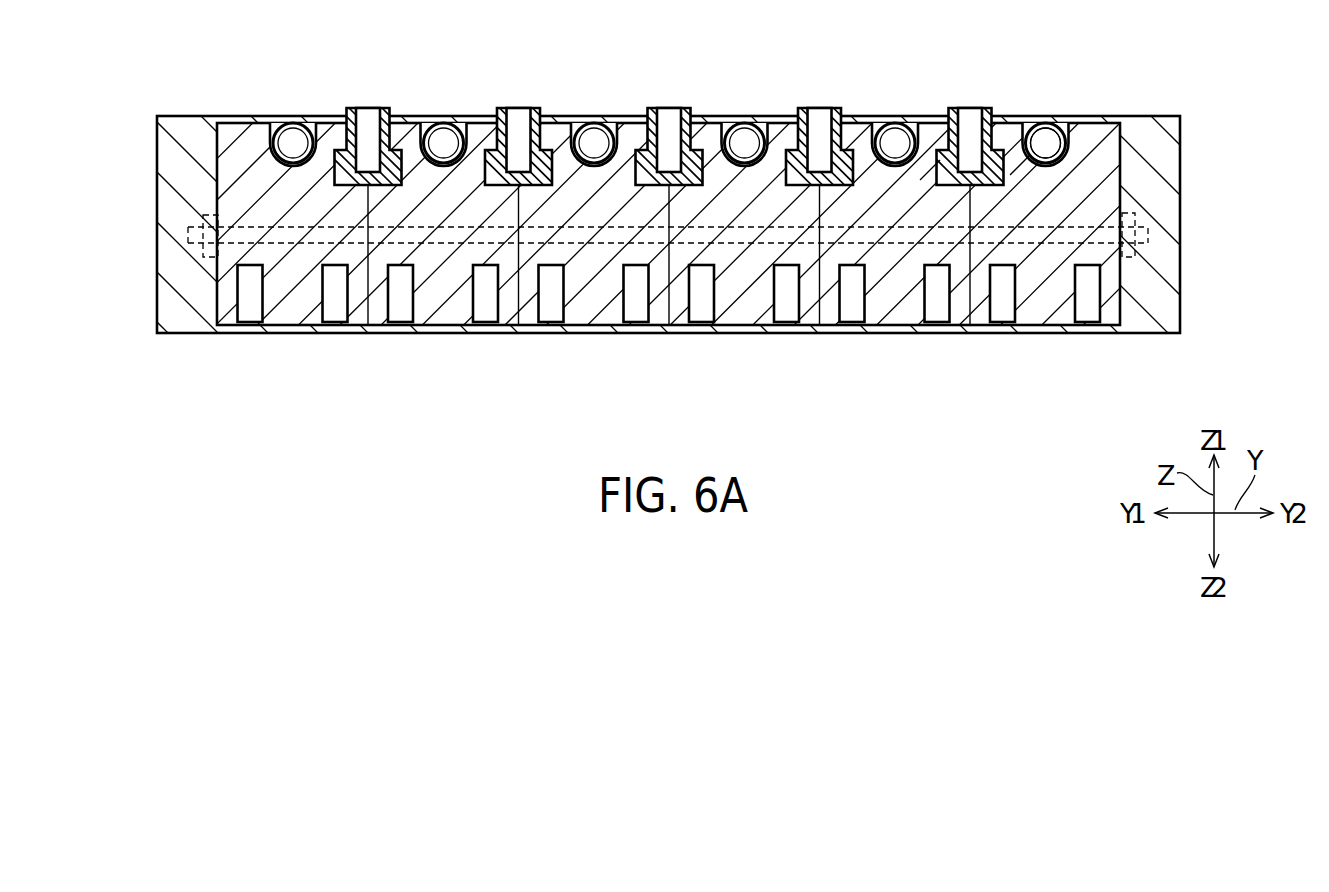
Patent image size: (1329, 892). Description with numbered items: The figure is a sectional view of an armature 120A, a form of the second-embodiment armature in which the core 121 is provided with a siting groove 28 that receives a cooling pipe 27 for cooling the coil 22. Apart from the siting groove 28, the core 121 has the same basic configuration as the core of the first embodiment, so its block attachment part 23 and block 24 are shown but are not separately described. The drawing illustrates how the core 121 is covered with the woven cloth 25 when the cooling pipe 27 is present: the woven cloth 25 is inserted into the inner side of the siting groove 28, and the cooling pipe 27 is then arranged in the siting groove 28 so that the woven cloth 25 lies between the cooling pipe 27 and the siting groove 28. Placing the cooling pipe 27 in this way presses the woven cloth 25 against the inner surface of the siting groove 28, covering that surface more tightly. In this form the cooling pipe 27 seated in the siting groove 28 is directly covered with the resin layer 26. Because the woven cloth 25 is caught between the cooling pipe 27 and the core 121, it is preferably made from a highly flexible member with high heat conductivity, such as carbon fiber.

The armature 120A is at (664, 196).
The core 121 is at (1092, 132).
The coil 22 is at (1087, 308).
The block attachment part 23 is at (920, 175).
The block 24 is at (967, 108).
The woven cloth 25 is at (1058, 166).
The resin layer 26 is at (1170, 205).
The cooling pipe 27 is at (1042, 123).
The siting groove 28 is at (1017, 172).